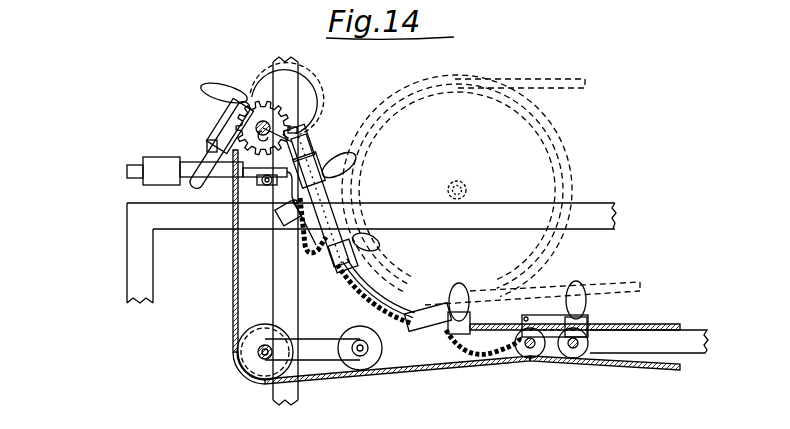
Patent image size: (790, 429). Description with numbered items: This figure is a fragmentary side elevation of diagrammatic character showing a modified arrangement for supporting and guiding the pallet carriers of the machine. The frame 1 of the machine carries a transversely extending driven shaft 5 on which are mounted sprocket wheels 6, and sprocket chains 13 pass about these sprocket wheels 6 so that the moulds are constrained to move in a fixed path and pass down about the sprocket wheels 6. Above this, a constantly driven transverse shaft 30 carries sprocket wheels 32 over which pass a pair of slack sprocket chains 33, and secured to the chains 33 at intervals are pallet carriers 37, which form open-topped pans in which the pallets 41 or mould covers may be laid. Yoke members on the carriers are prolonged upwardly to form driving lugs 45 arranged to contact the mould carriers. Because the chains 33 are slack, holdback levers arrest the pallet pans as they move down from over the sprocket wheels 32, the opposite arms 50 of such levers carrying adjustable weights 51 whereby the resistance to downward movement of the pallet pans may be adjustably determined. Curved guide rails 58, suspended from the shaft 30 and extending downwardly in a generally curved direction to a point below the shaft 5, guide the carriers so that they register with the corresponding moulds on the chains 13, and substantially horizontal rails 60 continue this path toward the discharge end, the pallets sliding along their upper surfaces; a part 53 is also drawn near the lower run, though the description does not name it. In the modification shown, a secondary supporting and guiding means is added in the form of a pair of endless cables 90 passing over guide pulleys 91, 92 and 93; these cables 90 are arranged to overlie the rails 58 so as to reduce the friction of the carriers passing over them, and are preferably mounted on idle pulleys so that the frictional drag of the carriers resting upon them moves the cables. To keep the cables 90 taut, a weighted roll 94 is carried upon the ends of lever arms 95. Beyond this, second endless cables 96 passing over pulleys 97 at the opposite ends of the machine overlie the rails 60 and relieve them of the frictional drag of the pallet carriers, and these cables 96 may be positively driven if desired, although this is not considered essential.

The frame 1 is at (135, 262).
The driven shaft 5 is at (466, 186).
The sprocket wheel 6 is at (573, 180).
The sprocket chain 13 is at (569, 78).
The transverse shaft 30 is at (264, 124).
The sprocket wheel 32 is at (290, 158).
The sprocket chain 33 is at (305, 236).
The pallet carrier 37 is at (215, 127).
The pallet 41 is at (210, 113).
The driving lug 45 is at (212, 90).
The lever arm 50 is at (131, 161).
The adjustable weight 51 is at (152, 173).
The bracket 53 is at (490, 338).
The curved guide rail 58 is at (290, 127).
The rail 60 is at (702, 328).
The cable 90 is at (232, 278).
The guide pulley 91 is at (296, 99).
The guide pulley 92 is at (257, 361).
The guide pulley 93 is at (532, 358).
The weighted roll 94 is at (361, 362).
The lever arm 95 is at (316, 346).
The second endless cable 96 is at (660, 371).
The pulley 97 is at (573, 358).